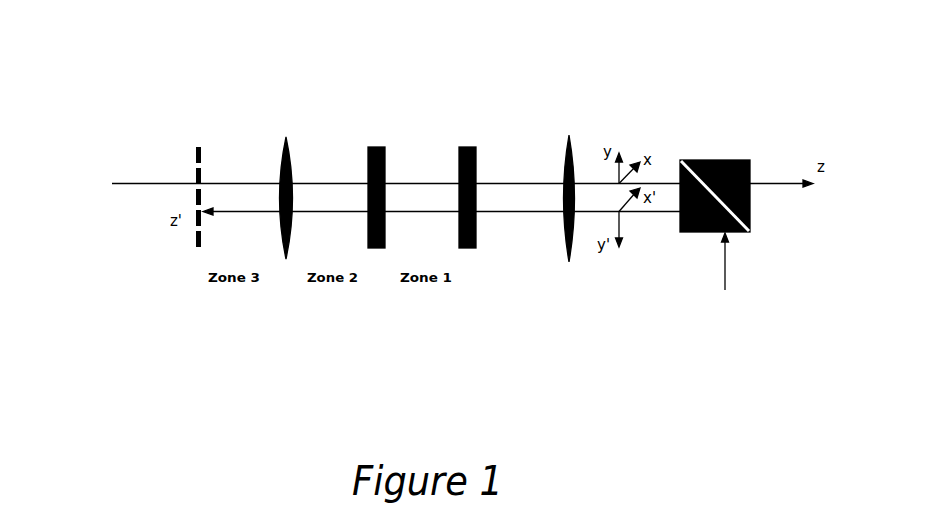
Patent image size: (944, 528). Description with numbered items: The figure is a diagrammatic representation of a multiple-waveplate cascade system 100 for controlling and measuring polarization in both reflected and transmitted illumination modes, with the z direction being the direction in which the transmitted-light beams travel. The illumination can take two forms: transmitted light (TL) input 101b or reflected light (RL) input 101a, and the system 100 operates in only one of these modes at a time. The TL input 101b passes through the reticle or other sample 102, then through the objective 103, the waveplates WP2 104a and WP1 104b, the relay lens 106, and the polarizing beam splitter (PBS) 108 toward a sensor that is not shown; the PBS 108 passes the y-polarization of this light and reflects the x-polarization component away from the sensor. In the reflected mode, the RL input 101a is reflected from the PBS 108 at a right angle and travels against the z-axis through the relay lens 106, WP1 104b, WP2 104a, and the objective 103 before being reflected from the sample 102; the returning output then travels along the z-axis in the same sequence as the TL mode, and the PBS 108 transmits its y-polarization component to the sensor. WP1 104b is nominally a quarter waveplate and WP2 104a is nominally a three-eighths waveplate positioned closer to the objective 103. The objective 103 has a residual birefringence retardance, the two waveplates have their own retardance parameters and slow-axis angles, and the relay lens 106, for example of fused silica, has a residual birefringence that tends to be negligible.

The system 100 is at (112, 63).
The reflected light (RL) input 101a is at (725, 290).
The transmitted light (TL) input 101b is at (125, 185).
The sample 102 is at (195, 235).
The objective 103 is at (285, 260).
The waveplate WP2 104a is at (377, 250).
The waveplate WP1 104b is at (468, 250).
The relay lens 106 is at (567, 263).
The polarizing beam splitter (PBS) 108 is at (690, 233).